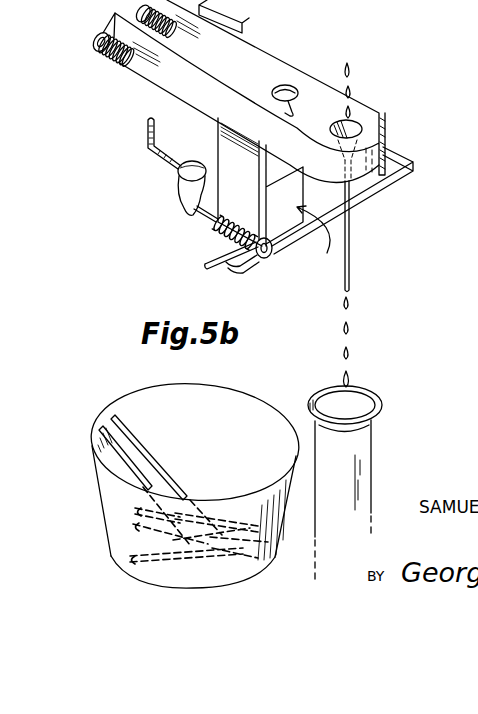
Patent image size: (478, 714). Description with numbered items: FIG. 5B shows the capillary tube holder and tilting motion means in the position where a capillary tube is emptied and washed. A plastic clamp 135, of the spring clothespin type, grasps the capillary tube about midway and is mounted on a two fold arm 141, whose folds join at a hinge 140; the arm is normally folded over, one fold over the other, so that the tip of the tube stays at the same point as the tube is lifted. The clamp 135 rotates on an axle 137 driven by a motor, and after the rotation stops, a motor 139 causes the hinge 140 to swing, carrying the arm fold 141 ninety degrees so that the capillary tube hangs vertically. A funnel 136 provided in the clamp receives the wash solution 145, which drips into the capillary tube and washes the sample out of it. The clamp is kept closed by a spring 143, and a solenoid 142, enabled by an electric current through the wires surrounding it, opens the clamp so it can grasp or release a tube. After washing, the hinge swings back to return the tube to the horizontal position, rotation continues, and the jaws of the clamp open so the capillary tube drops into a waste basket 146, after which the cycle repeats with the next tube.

The plastic clamp 135 is at (408, 148).
The funnel 136 is at (357, 128).
The axle 137 is at (206, 264).
The motor 139 is at (178, 184).
The hinge 140 is at (247, 256).
The two fold arm 141 is at (216, 136).
The solenoid 142 is at (100, 42).
The spring 143 is at (286, 86).
The wash solution 145 is at (390, 56).
The waste basket 146 is at (112, 521).